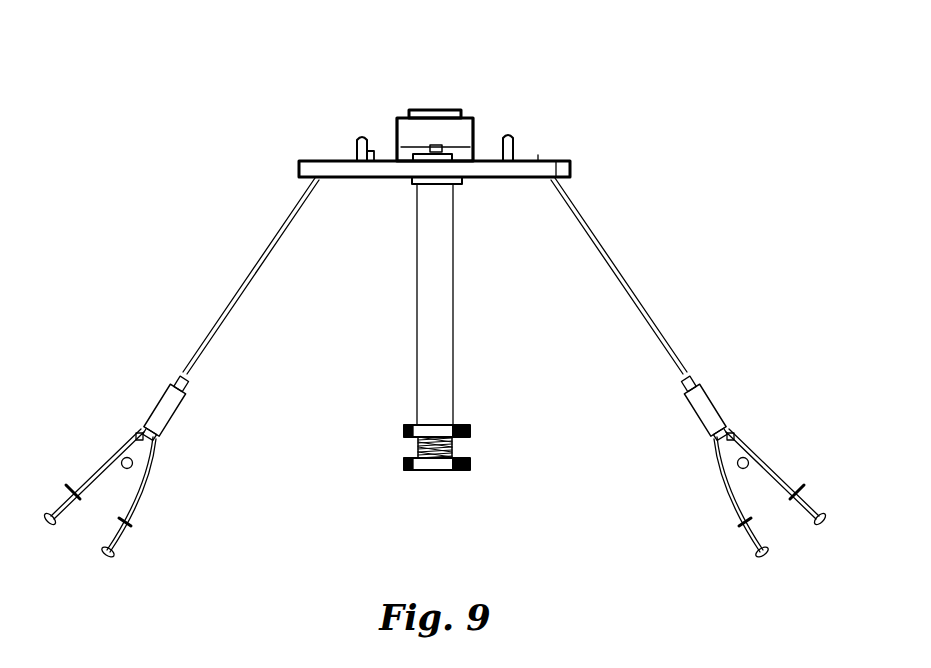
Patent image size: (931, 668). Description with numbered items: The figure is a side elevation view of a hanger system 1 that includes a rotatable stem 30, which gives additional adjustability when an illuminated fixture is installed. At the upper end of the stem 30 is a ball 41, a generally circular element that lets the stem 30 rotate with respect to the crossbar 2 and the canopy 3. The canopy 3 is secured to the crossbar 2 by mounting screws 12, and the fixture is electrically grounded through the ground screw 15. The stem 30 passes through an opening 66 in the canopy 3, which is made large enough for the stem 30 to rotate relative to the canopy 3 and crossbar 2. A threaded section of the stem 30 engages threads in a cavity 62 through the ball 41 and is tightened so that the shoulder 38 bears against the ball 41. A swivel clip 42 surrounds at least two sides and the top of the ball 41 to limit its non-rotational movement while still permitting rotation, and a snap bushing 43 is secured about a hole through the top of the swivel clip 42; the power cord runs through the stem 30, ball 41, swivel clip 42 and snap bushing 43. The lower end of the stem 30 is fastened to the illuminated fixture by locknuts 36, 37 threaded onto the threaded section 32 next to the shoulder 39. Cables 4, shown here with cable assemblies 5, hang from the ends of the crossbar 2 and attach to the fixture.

The hanger system 1 is at (277, 73).
The crossbar 2 is at (539, 159).
The canopy 3 is at (574, 166).
The cables 4 is at (232, 290).
The cable assembly 5 is at (130, 401).
The mounting screws 12 is at (360, 137).
The ground screw 15 is at (360, 152).
The stem 30 is at (455, 300).
The threaded section 32 is at (405, 445).
The locknut 36 is at (470, 428).
The locknut 37 is at (470, 465).
The shoulder 38 is at (412, 185).
The shoulder 39 is at (418, 422).
The ball 41 is at (474, 146).
The swivel clip 42 is at (441, 145).
The snap bushing 43 is at (428, 113).
The cavity 62 is at (448, 117).
The opening 66 is at (462, 185).